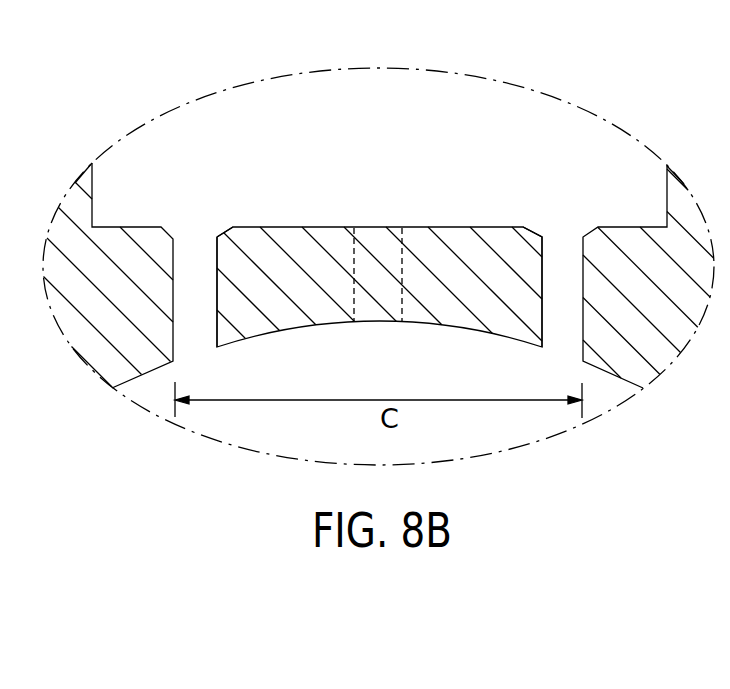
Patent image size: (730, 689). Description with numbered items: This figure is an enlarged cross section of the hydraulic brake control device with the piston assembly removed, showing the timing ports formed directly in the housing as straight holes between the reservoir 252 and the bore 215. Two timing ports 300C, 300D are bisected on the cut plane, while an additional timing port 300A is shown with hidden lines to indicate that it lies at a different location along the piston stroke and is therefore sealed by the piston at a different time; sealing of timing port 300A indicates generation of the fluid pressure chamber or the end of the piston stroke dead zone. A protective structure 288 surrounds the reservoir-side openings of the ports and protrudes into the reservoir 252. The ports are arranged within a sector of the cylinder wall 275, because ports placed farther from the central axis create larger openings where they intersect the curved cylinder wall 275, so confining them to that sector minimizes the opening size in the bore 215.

The reservoir 252 is at (352, 92).
The bore 215 is at (152, 402).
The cylinder wall 275 is at (613, 374).
The protective structure 288 is at (72, 205).
The timing port 300A is at (378, 313).
The timing port 300C is at (193, 345).
The timing port 300D is at (565, 347).